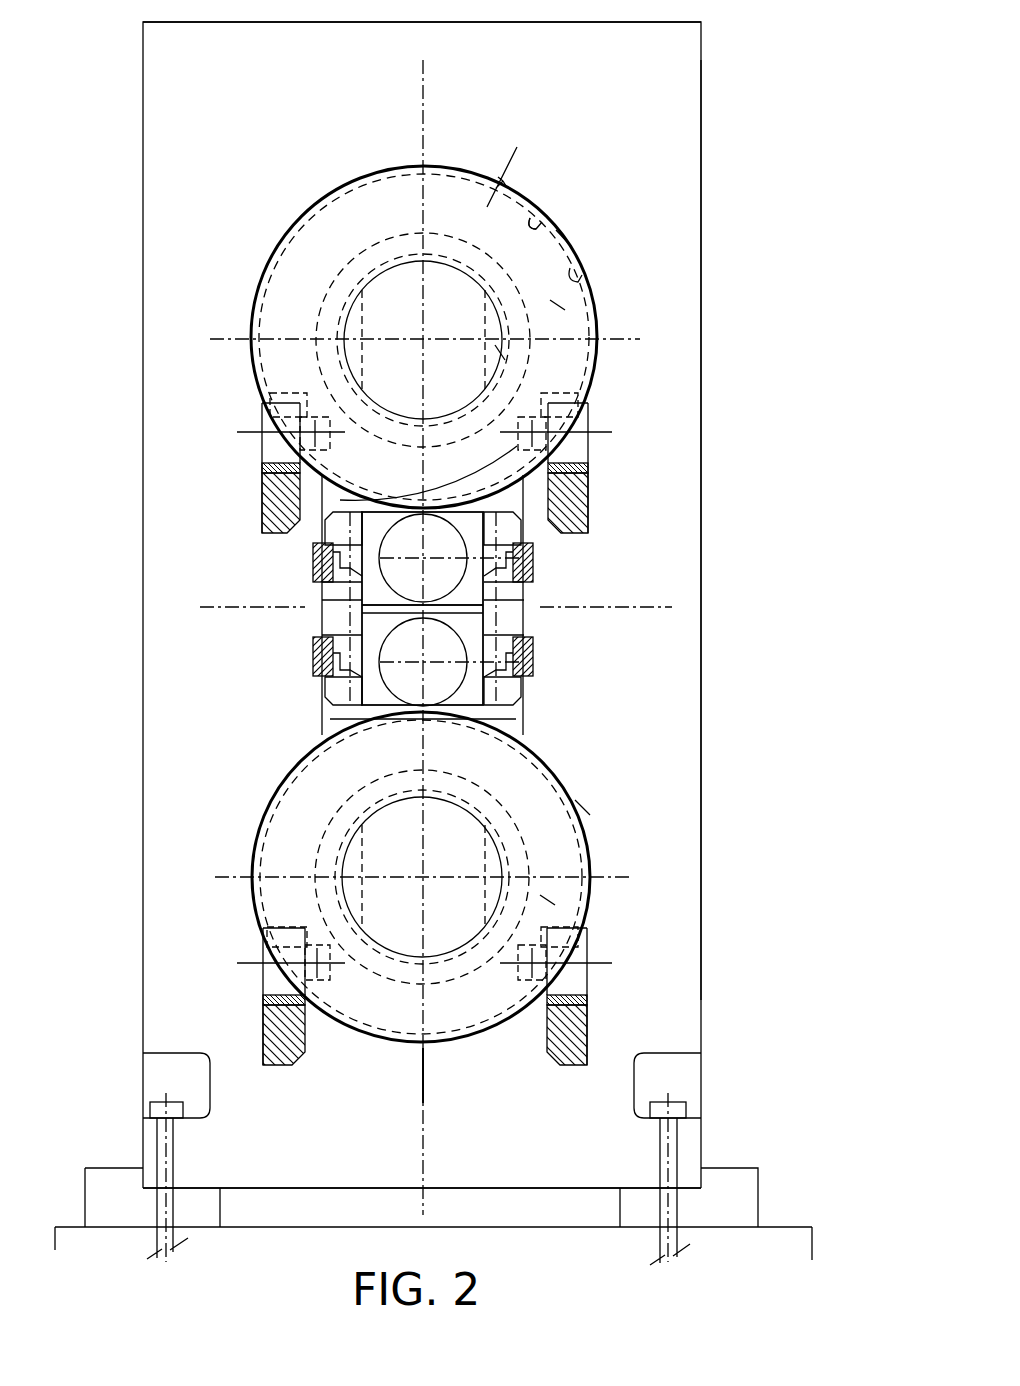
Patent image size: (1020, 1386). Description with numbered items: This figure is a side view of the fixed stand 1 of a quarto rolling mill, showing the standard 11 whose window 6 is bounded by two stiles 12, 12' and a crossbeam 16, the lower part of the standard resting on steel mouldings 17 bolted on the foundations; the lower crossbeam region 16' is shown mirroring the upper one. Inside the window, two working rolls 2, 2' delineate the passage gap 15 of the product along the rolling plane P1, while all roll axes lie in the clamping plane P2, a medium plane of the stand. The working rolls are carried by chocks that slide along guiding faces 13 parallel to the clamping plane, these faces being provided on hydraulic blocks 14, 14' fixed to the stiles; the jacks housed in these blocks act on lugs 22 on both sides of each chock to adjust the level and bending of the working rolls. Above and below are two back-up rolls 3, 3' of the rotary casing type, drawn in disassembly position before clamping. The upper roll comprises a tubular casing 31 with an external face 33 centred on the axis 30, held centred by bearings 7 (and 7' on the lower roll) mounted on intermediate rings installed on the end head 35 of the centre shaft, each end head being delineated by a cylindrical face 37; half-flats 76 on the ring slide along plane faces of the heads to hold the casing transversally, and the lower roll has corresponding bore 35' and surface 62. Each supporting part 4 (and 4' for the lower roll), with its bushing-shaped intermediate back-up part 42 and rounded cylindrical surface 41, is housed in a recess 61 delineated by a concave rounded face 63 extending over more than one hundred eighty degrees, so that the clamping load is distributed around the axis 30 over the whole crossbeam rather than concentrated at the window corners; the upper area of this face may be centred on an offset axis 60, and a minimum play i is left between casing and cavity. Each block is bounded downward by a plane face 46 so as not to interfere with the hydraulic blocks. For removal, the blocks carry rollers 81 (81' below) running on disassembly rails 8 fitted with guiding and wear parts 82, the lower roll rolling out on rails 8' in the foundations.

The fixed stand 1 is at (713, 50).
The standard 11 is at (675, 150).
The stile 12 is at (197, 438).
The stile 12' is at (665, 468).
The guiding faces 13 is at (480, 622).
The hydraulic block 14 is at (306, 608).
The hydraulic block 14' is at (547, 620).
The passage gap 15 is at (370, 618).
The crossbeam 16 is at (394, 60).
The lower frame portion 16' is at (388, 1150).
The steel mouldings 17 is at (735, 1200).
The working roll 2 is at (498, 558).
The working roll 2' is at (489, 662).
The lugs 22 is at (353, 598).
The upper back-up roll 3 is at (386, 336).
The lower back-up roll 3' is at (376, 877).
The axis 30 is at (423, 340).
The tubular casing 31 is at (557, 306).
The external face 33 is at (545, 220).
The end head 35 is at (418, 266).
The bore of lower roll 35' is at (508, 877).
The cylindrical face 37 is at (503, 353).
The supporting part 4 is at (512, 438).
The lower roll body 4' is at (613, 908).
The cylindrical surface 41 is at (566, 237).
The intermediate back-up part 42 is at (540, 238).
The plane face 46 is at (588, 445).
The window 6 is at (340, 502).
The axis 60 is at (517, 592).
The recess 61 is at (588, 510).
The lower roll surface 62 is at (585, 810).
The concave rounded face 63 is at (585, 280).
The bearing 7 is at (400, 292).
The lower roll core 7' is at (362, 873).
The half-flats 76 is at (487, 327).
The rails 8 is at (242, 503).
The rails 8' is at (388, 996).
The rollers 81 is at (262, 423).
The lower fastening screw 81' is at (398, 956).
The guiding and wear parts 82 is at (268, 463).
The rolling plane P1 is at (421, 605).
The clamping plane P2 is at (423, 1075).
The play i is at (505, 176).